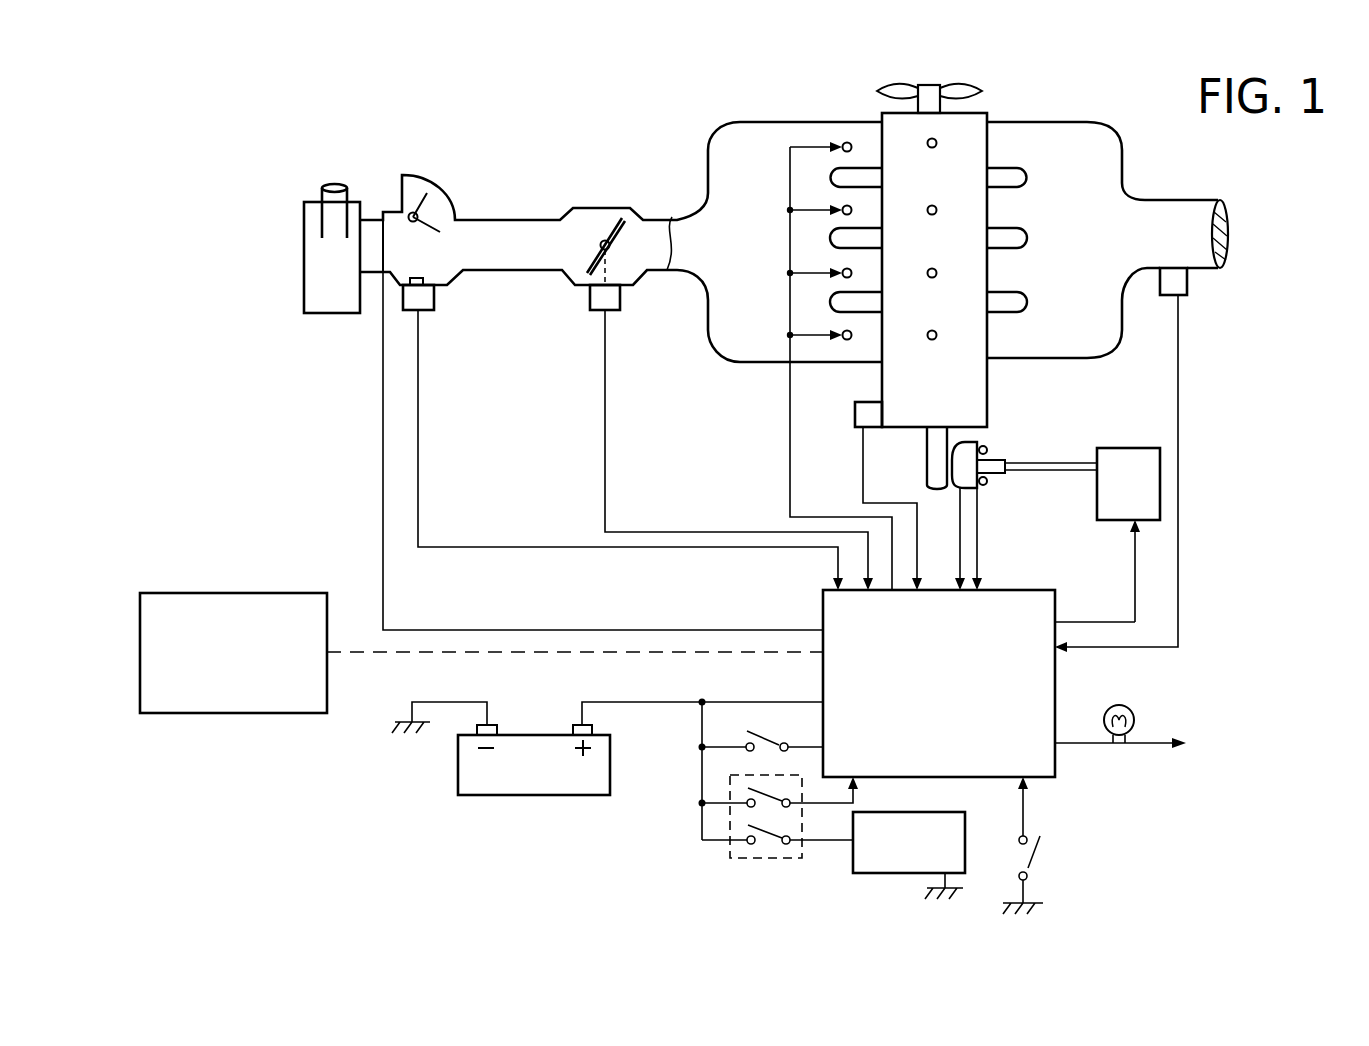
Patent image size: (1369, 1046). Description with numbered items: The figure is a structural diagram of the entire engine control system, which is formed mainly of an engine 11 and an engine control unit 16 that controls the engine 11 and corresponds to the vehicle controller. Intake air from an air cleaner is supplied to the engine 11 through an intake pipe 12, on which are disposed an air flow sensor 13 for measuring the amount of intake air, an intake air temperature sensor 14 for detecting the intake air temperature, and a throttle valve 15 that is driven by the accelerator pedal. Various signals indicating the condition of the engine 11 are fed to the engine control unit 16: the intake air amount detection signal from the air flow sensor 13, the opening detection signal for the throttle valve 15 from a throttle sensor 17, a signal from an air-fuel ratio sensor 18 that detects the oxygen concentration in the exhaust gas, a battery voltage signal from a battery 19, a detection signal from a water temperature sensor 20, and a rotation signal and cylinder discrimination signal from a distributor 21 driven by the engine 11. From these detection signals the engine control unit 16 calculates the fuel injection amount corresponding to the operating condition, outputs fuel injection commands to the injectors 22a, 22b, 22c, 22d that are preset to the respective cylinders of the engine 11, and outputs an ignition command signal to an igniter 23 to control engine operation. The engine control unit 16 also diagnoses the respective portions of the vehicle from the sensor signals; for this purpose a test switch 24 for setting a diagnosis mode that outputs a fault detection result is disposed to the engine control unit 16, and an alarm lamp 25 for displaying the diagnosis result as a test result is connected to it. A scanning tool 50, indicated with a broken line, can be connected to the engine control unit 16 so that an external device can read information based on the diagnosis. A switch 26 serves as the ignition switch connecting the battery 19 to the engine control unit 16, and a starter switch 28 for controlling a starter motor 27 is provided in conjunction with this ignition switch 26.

The engine 11 is at (970, 130).
The intake pipe 12 is at (485, 218).
The air flow sensor 13 is at (409, 212).
The intake air temperature sensor 14 is at (434, 297).
The throttle valve 15 is at (605, 238).
The engine control unit 16 is at (1057, 760).
The throttle sensor 17 is at (620, 297).
The air-fuel ratio sensor 18 is at (1185, 285).
The battery 19 is at (577, 797).
The water temperature sensor 20 is at (853, 414).
The distributor 21 is at (986, 446).
The injector 22a is at (845, 142).
The injector 22b is at (844, 206).
The injector 22c is at (844, 278).
The injector 22d is at (847, 340).
The igniter 23 is at (1135, 446).
The test switch 24 is at (1040, 850).
The alarm lamp 25 is at (1135, 718).
The ignition switch 26 is at (766, 730).
The starter motor 27 is at (897, 875).
The starter switch 28 is at (770, 860).
The scanning tool 50 is at (294, 592).